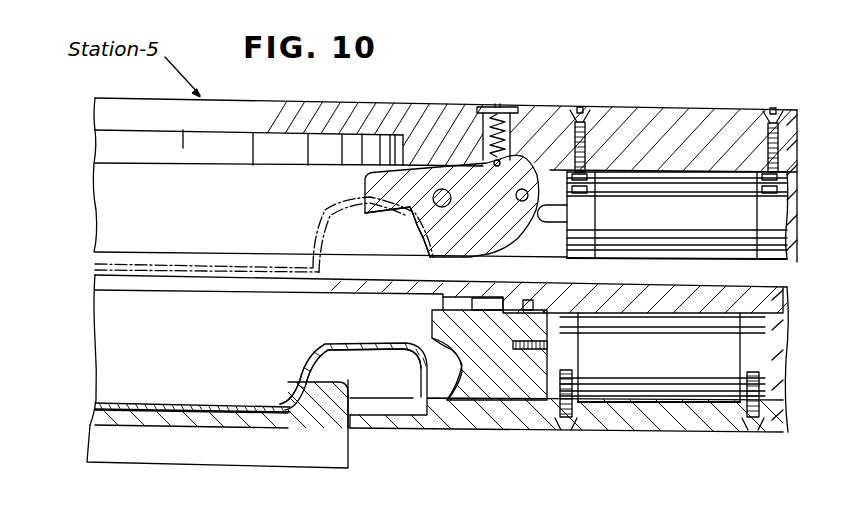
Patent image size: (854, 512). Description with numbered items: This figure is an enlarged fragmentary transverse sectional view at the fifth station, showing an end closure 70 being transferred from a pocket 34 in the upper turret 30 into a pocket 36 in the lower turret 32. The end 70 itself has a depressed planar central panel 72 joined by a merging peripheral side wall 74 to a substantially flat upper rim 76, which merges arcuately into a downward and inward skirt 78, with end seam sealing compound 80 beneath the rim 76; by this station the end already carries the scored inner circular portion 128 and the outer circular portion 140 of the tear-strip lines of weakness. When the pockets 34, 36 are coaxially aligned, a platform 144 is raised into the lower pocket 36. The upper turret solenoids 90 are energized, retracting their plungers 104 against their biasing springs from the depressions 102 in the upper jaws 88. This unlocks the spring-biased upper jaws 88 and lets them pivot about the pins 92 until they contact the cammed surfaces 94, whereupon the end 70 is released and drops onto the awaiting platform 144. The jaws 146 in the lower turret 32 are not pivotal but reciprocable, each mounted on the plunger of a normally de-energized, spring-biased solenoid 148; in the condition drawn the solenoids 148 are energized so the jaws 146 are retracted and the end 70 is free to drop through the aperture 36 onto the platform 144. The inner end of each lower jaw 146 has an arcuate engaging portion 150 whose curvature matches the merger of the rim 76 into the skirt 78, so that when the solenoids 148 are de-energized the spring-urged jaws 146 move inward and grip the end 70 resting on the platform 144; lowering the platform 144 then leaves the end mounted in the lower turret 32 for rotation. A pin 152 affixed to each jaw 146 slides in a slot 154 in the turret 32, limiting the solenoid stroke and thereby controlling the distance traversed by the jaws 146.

The upper turret 30 is at (694, 106).
The lower turret 32 is at (703, 433).
The pocket 34 is at (307, 142).
The pocket 36 is at (345, 296).
The end closure 70 is at (123, 403).
The central panel 72 is at (182, 403).
The peripheral side wall 74 is at (302, 360).
The upper rim 76 is at (373, 343).
The skirt 78 is at (400, 420).
The end seam sealing compound 80 is at (363, 366).
The upper jaw 88 is at (378, 184).
The solenoid 90 is at (697, 225).
The pin 92 is at (417, 217).
The cammed surface 94 is at (505, 133).
The depression 102 is at (516, 194).
The plunger 104 is at (546, 225).
The circular portion 128 is at (222, 407).
The outer circular portion 140 is at (283, 403).
The platform 144 is at (130, 418).
The lower jaw 146 is at (520, 390).
The solenoid 148 is at (678, 364).
The arcuate engaging portion 150 is at (432, 405).
The pin 152 is at (530, 299).
The slot 154 is at (493, 303).